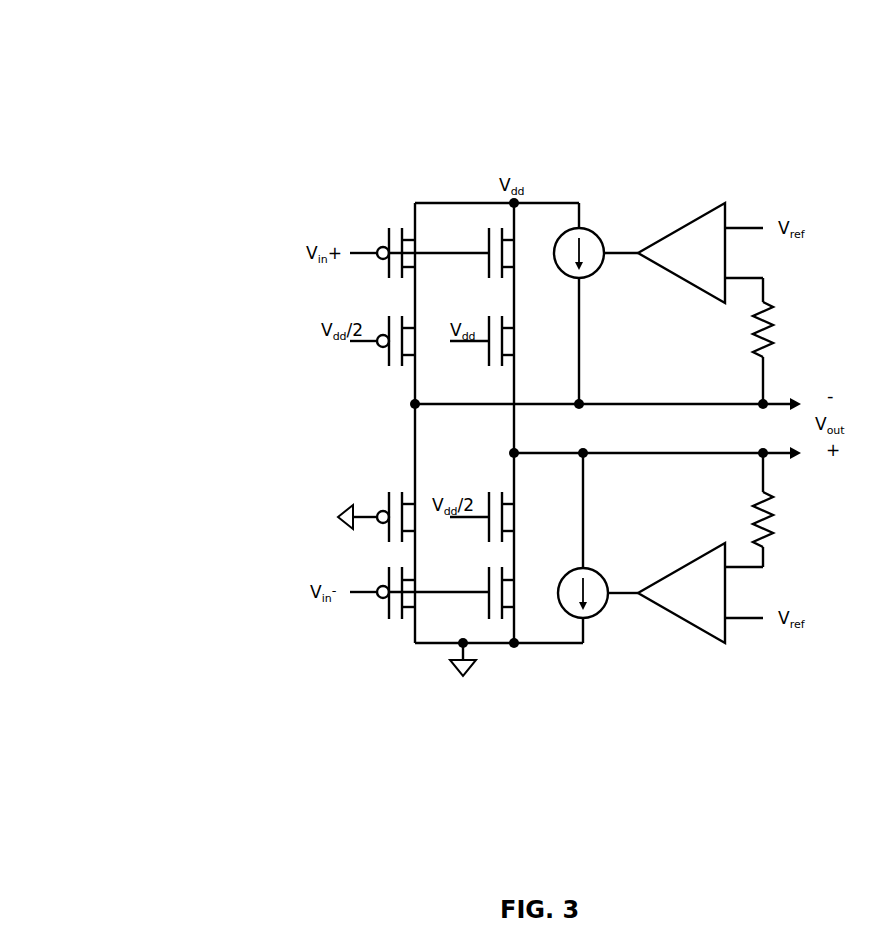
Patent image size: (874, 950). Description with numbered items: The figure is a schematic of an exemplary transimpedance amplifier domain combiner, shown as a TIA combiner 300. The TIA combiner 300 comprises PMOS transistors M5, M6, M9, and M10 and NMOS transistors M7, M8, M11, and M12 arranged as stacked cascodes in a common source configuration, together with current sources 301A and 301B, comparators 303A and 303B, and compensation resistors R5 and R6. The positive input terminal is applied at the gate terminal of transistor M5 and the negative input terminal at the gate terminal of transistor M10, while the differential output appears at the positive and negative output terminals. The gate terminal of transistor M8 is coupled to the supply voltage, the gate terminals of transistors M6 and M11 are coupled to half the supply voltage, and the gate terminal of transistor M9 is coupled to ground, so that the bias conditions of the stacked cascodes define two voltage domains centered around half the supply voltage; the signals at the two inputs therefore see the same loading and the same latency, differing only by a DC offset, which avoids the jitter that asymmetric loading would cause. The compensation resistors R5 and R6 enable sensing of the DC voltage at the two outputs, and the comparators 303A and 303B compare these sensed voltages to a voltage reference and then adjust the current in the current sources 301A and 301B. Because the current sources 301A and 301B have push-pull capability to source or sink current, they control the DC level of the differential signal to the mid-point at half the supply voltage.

The TIA combiner 300 is at (120, 93).
The current source 301A is at (597, 236).
The current source 301B is at (601, 576).
The comparator 303A is at (683, 253).
The comparator 303B is at (685, 593).
The PMOS transistor M5 is at (400, 242).
The PMOS transistor M6 is at (409, 341).
The NMOS transistor M7 is at (509, 253).
The NMOS transistor M8 is at (509, 341).
The PMOS transistor M9 is at (409, 517).
The PMOS transistor M10 is at (394, 605).
The NMOS transistor M11 is at (515, 517).
The NMOS transistor M12 is at (515, 593).
The compensation resistor R5 is at (750, 341).
The compensation resistor R6 is at (746, 510).